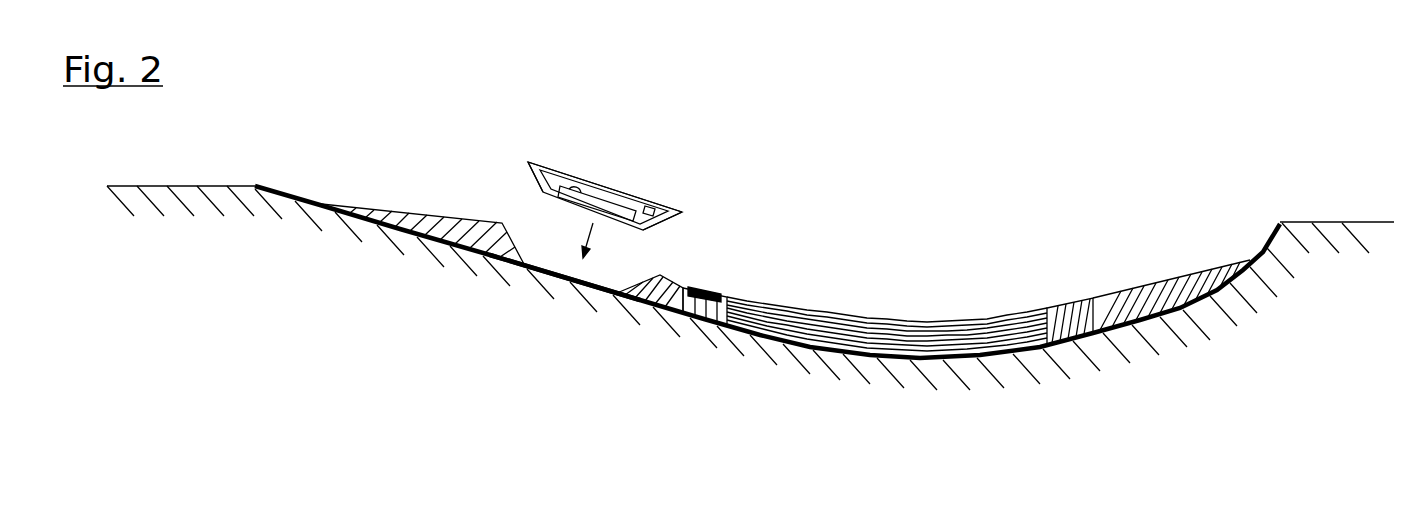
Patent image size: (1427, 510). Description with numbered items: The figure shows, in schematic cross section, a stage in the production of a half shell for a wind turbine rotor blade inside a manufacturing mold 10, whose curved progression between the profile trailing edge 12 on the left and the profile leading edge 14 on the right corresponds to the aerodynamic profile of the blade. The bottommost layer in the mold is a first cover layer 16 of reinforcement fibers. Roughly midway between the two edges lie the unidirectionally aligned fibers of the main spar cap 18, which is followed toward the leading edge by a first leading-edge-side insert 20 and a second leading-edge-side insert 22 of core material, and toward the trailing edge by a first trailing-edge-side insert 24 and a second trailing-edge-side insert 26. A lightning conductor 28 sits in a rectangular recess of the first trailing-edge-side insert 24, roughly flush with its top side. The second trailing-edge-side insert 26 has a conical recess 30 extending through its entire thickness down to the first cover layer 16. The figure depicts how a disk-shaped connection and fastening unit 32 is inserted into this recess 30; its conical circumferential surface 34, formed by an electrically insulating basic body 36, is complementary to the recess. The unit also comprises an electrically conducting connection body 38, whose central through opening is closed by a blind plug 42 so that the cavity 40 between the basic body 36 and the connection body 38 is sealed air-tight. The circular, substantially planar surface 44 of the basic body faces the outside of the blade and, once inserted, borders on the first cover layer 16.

The manufacturing mold 10 is at (1105, 357).
The profile trailing edge 12 is at (255, 190).
The profile leading edge 14 is at (1283, 225).
The first cover layer 16 is at (316, 203).
The main spar cap 18 is at (932, 325).
The first leading-edge-side insert 20 is at (1070, 308).
The second leading-edge-side insert 22 is at (1153, 285).
The first trailing-edge-side insert 24 is at (704, 323).
The second trailing-edge-side insert 26 is at (448, 228).
The lightning conductor 28 is at (706, 288).
The recess 30 is at (547, 262).
The connection and fastening unit 32 is at (618, 132).
The conical circumferential surface 34 is at (528, 163).
The basic body 36 is at (682, 212).
The connection body 38 is at (550, 168).
The cavity 40 is at (582, 198).
The blind plug 42 is at (603, 184).
The planar surface 44 is at (615, 250).